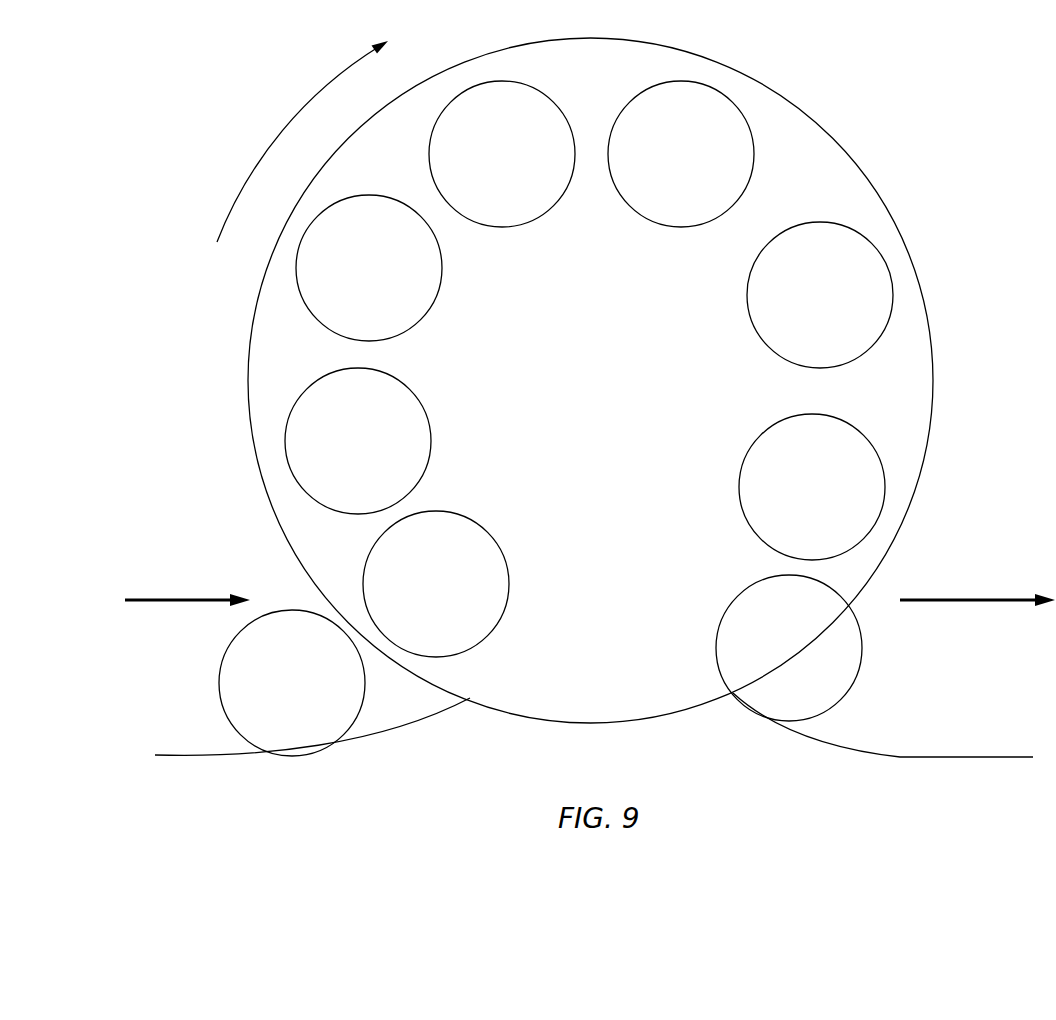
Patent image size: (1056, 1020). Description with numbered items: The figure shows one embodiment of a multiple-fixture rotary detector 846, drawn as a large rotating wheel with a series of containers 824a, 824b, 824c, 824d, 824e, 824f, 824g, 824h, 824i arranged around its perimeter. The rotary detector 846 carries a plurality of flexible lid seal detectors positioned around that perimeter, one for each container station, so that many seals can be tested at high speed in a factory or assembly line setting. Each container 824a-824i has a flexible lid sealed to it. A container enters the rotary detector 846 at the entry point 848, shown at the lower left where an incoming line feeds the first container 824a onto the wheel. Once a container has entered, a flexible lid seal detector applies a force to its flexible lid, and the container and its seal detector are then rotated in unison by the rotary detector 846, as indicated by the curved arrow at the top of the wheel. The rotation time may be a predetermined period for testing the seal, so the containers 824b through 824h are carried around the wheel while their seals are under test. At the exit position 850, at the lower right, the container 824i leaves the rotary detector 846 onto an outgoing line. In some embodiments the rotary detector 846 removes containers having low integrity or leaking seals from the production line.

The multiple-fixture rotary detector 846 is at (841, 102).
The container 824a is at (227, 650).
The container 824b is at (457, 517).
The container 824c is at (430, 423).
The container 824d is at (433, 305).
The container 824e is at (465, 218).
The container 824f is at (692, 227).
The container 824g is at (747, 307).
The container 824h is at (757, 437).
The container 824i is at (735, 600).
The entry point 848 is at (264, 570).
The exit position 850 is at (886, 576).